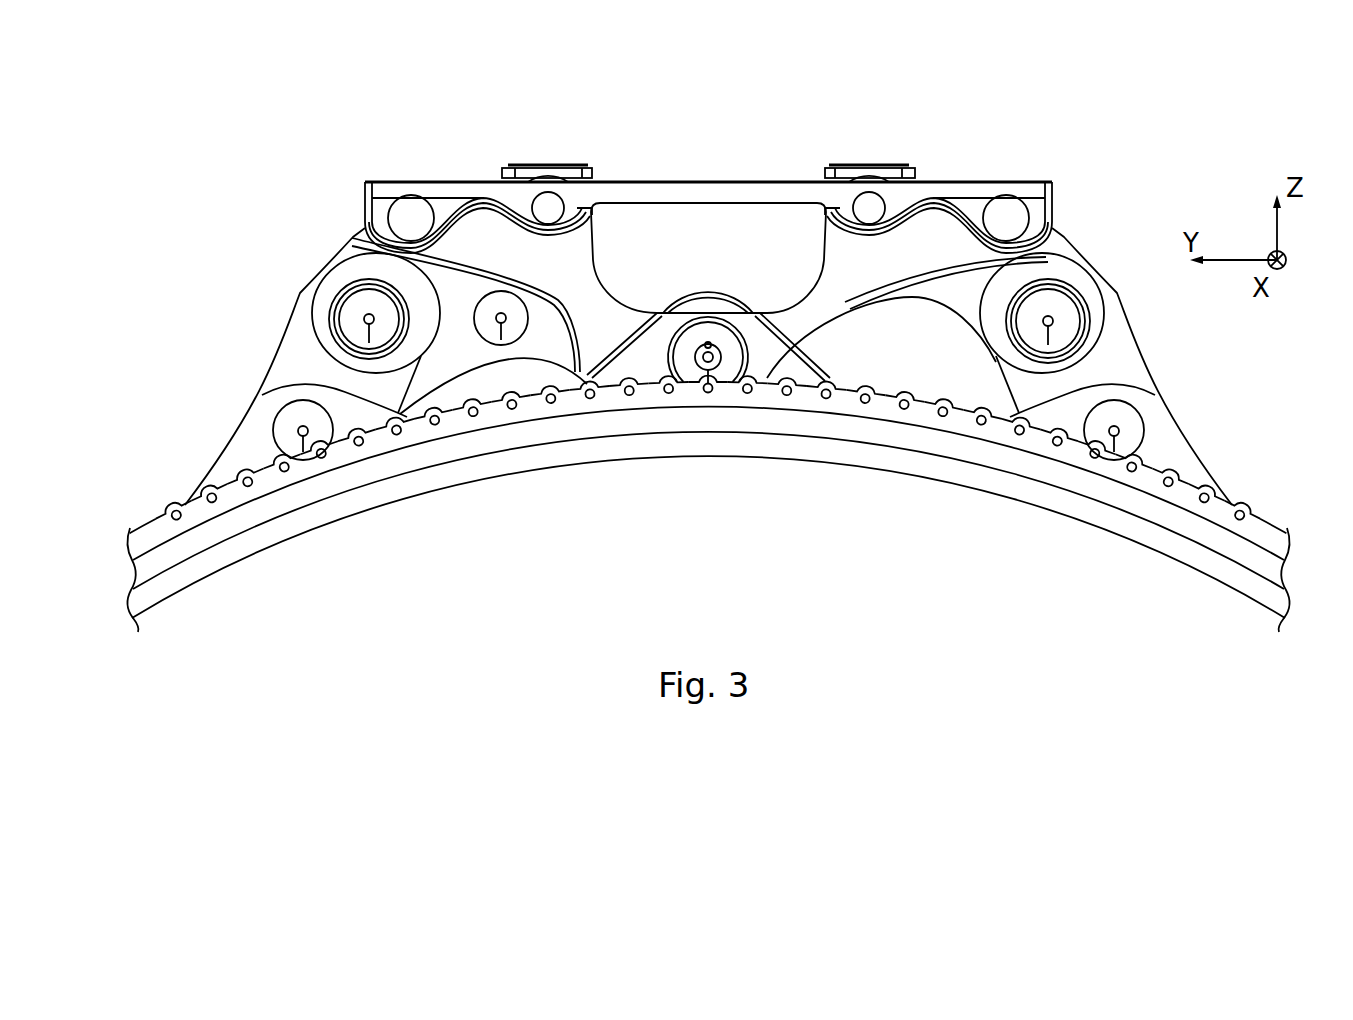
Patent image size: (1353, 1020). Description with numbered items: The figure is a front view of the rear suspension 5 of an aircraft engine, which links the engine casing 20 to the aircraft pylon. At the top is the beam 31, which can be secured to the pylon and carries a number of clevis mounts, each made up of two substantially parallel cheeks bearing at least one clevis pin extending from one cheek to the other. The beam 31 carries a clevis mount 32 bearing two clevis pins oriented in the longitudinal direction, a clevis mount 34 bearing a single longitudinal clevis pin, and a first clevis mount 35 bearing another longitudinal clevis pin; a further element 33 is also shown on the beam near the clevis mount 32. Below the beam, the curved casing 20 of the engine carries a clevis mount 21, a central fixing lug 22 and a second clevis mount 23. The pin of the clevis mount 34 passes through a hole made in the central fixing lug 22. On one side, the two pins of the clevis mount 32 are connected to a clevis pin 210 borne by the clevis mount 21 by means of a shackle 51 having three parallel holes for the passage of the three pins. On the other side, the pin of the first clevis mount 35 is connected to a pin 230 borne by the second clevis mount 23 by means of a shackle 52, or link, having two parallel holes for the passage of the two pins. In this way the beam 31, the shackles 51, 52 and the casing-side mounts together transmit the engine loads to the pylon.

The rear suspension 5 is at (232, 296).
The casing 20 is at (593, 423).
The clevis mount 21 is at (238, 466).
The central fixing lug 22 is at (808, 378).
The clevis mount 23 is at (1192, 473).
The clevis pin 210 is at (291, 443).
The pin 230 is at (1095, 438).
The beam 31 is at (940, 222).
The clevis mount 32 is at (366, 316).
The bolt 33 is at (488, 332).
The clevis mount 34 is at (728, 365).
The first clevis mount 35 is at (1038, 332).
The shackle 51 is at (315, 362).
The shackle 52 is at (1122, 365).